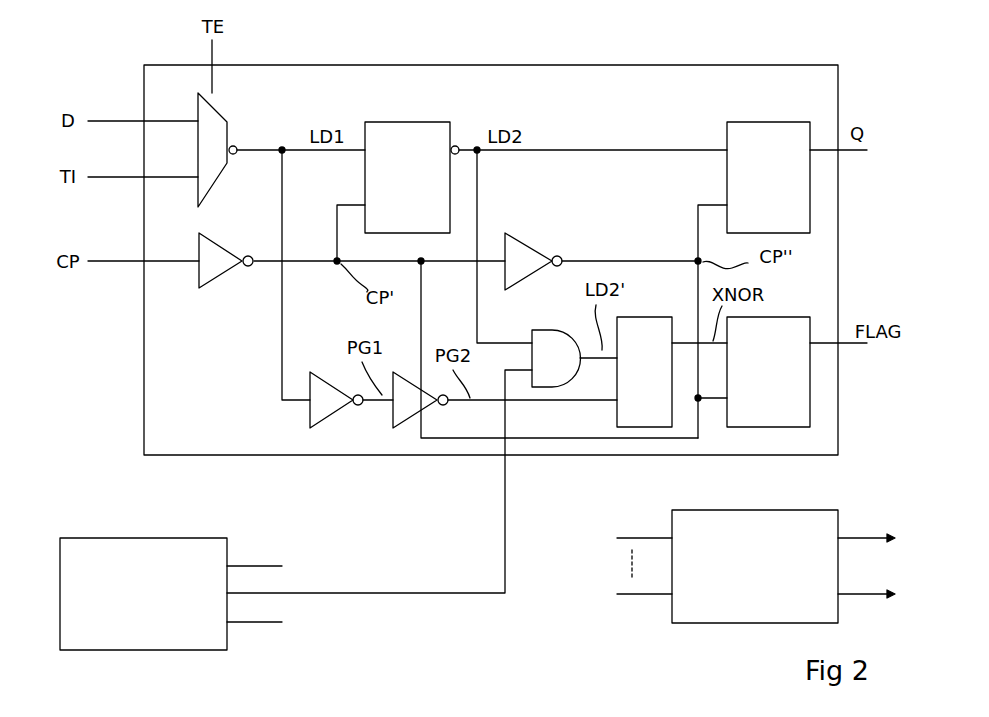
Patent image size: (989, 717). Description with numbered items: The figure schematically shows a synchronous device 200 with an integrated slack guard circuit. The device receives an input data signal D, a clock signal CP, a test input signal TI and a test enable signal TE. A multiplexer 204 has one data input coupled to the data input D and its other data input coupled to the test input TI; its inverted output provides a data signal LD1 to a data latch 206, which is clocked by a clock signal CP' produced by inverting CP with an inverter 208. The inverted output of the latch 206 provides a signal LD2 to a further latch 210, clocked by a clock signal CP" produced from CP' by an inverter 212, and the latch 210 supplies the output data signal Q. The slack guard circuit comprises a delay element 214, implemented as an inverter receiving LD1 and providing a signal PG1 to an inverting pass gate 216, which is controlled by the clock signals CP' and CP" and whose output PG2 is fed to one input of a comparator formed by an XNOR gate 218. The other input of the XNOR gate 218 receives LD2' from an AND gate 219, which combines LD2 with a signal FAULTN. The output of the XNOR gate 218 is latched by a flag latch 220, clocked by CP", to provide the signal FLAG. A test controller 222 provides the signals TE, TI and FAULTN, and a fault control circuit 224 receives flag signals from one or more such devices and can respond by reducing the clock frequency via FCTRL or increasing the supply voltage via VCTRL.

The synchronous device 200 is at (570, 80).
The multiplexer 204 is at (219, 136).
The latch 206 is at (413, 131).
The inverter 208 is at (215, 257).
The further latch 210 is at (777, 131).
The inverter 212 is at (523, 257).
The delay element 214 is at (332, 410).
The inverting pass gate 216 is at (413, 400).
The XNOR gate 218 is at (651, 325).
The AND gate 219 is at (550, 338).
The flag latch 220 is at (773, 326).
The test controller 222 is at (163, 552).
The fault control circuit 224 is at (777, 525).